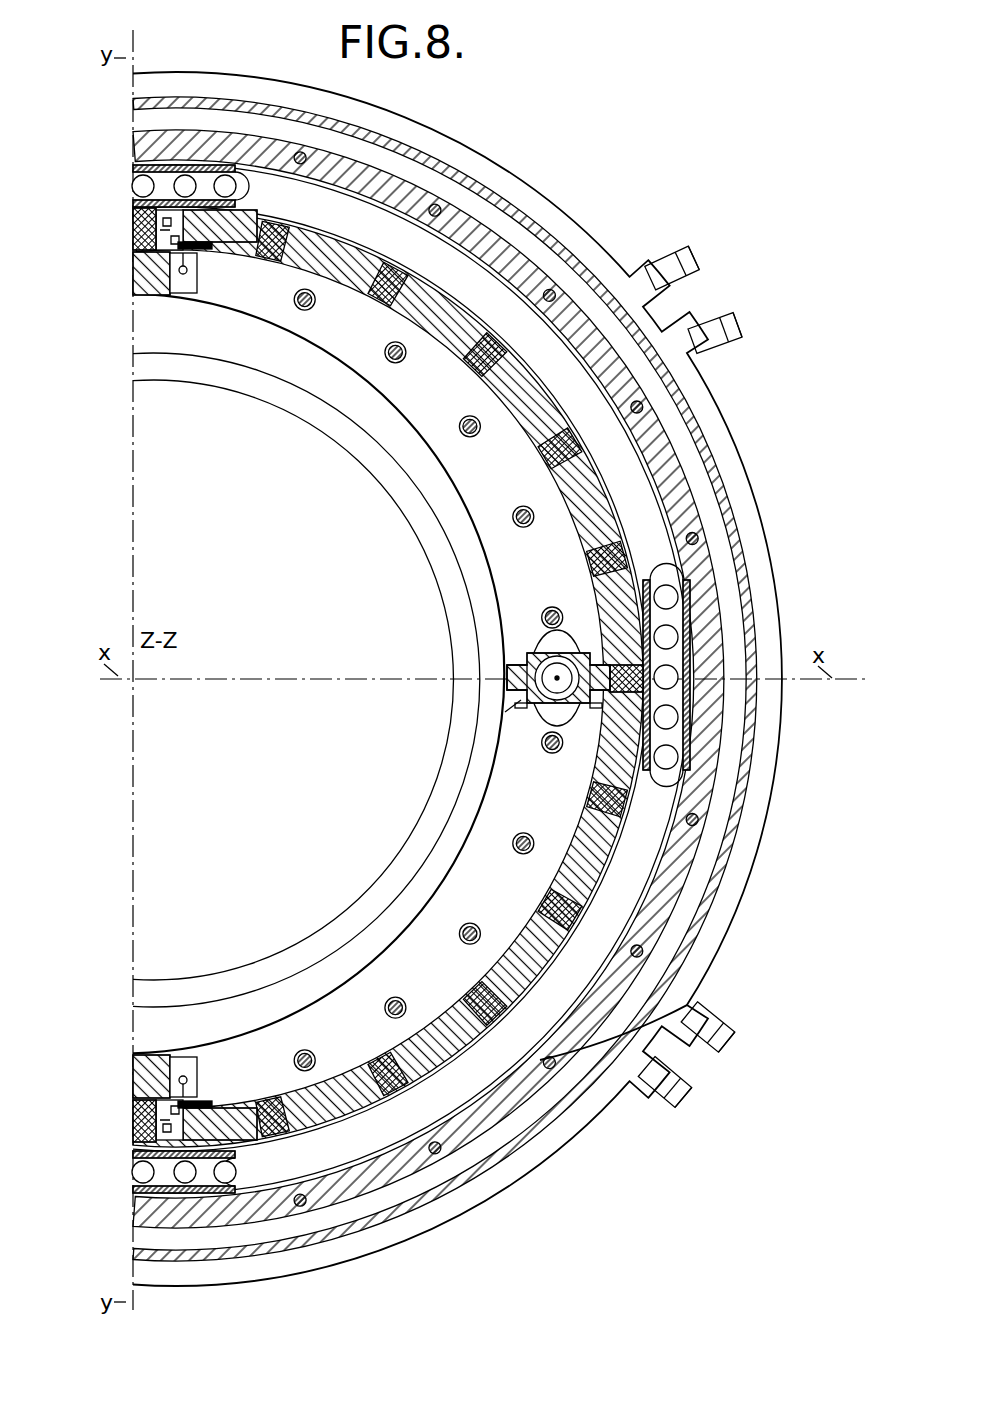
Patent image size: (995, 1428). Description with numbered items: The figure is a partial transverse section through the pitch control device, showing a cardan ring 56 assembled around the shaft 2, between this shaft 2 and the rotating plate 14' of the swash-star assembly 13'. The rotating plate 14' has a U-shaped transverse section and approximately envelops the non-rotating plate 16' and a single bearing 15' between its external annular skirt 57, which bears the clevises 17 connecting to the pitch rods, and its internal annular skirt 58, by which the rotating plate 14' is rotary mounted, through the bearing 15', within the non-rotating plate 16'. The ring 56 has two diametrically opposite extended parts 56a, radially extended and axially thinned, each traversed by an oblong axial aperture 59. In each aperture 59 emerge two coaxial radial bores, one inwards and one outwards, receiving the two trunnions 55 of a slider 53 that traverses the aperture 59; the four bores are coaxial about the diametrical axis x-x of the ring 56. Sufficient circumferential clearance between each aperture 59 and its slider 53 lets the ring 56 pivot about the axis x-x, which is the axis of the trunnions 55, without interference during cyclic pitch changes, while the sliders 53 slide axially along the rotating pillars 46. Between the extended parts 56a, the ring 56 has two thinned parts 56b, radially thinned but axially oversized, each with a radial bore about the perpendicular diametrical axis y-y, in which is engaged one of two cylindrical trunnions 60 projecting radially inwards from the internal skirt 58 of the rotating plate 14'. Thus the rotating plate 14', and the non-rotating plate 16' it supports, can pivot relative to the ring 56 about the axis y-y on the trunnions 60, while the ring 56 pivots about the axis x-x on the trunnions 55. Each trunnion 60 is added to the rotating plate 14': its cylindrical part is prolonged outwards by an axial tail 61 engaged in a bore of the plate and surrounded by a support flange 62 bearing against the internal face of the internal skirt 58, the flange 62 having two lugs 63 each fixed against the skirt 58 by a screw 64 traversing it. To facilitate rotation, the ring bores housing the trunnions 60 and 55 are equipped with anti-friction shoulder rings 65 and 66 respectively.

The shaft 2 is at (392, 890).
The swash-star assembly 13' is at (457, 679).
The rotating plate 14' is at (674, 1008).
The bearing 15' is at (452, 687).
The non-rotating plate 16' is at (428, 679).
The clevises 17 is at (677, 272).
The rotating pillars 46 is at (548, 706).
The slider 53 is at (508, 666).
The trunnions 55 is at (507, 694).
The cardan ring 56 is at (427, 406).
The extended parts 56a is at (522, 720).
The thinned parts 56b is at (183, 276).
The external annular skirt 57 is at (713, 900).
The internal annular skirt 58 is at (597, 830).
The axial aperture 59 is at (542, 634).
The trunnions 60 is at (165, 278).
The axial tail 61 is at (143, 216).
The support flange 62 is at (190, 240).
The lugs 63 is at (205, 252).
The screw 64 is at (166, 230).
The anti-friction shoulder rings 65 is at (176, 293).
The anti-friction shoulder rings 66 is at (518, 705).